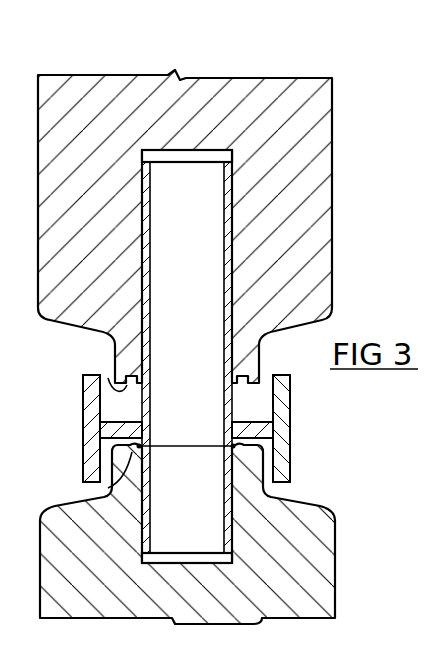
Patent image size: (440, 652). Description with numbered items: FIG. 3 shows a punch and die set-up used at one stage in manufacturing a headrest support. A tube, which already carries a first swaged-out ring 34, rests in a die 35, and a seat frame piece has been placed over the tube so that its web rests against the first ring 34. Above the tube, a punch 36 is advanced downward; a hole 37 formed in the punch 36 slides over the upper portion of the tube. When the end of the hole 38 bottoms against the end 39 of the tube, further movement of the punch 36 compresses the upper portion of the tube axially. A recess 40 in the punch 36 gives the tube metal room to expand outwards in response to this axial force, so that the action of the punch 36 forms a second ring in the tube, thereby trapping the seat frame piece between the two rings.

The first swaged-out ring 34 is at (108, 488).
The die 35 is at (300, 570).
The punch 36 is at (310, 107).
The hole 37 is at (233, 212).
The end of the hole 38 is at (185, 150).
The end of the tube 39 is at (160, 165).
The recess 40 is at (108, 378).